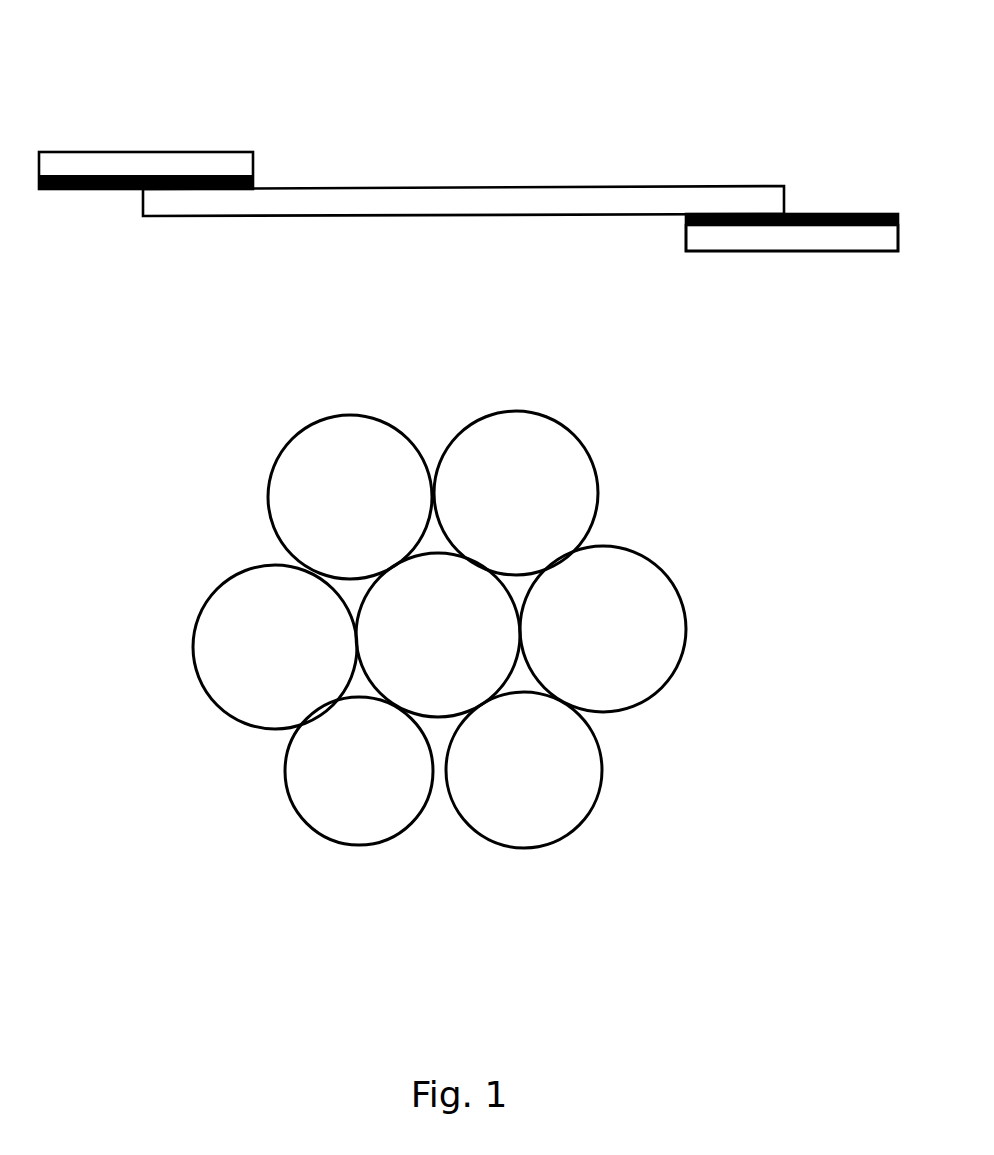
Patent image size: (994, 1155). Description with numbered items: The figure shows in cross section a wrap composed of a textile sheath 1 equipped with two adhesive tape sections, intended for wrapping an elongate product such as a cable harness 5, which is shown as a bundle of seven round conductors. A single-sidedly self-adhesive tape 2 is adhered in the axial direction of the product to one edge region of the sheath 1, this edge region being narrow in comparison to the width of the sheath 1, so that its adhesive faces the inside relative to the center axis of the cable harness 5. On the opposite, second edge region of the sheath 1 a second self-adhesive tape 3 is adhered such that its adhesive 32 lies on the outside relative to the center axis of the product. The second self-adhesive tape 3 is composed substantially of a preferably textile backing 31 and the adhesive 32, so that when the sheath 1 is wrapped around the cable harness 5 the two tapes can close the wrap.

The textile sheath 1 is at (430, 200).
The single-sidedly self-adhesive tape 2 is at (108, 165).
The second self-adhesive tape 3 is at (842, 238).
The textile backing 31 is at (725, 237).
The adhesive 32 is at (877, 215).
The cable harness 5 is at (405, 626).